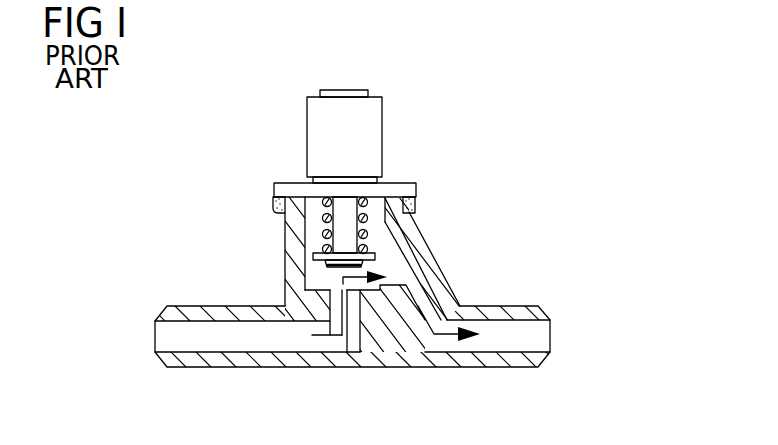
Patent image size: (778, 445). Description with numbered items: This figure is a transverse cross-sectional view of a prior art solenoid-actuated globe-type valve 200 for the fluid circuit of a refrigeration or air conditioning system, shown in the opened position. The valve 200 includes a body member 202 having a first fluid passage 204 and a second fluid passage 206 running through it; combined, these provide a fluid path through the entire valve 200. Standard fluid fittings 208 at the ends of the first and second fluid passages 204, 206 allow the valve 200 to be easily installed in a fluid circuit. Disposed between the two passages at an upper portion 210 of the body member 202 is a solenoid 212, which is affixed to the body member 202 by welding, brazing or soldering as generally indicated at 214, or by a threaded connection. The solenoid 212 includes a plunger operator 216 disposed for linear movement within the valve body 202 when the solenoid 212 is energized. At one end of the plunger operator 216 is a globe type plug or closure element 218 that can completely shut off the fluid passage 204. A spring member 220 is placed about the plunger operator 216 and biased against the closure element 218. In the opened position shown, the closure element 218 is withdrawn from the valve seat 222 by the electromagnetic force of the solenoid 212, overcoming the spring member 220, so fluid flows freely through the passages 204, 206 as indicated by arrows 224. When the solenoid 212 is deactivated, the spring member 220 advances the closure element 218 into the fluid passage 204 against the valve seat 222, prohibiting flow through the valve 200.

The valve 200 is at (258, 111).
The body member 202 is at (461, 367).
The first fluid passage 204 is at (222, 350).
The second fluid passage 206 is at (518, 321).
The standard fluid fittings 208 is at (160, 367).
The upper portion 210 is at (303, 243).
The solenoid 212 is at (382, 124).
The affixing means 214 is at (416, 209).
The plunger operator 216 is at (350, 238).
The closure element 218 is at (376, 257).
The spring member 220 is at (323, 220).
The valve seat 222 is at (332, 290).
The arrows 224 is at (427, 327).